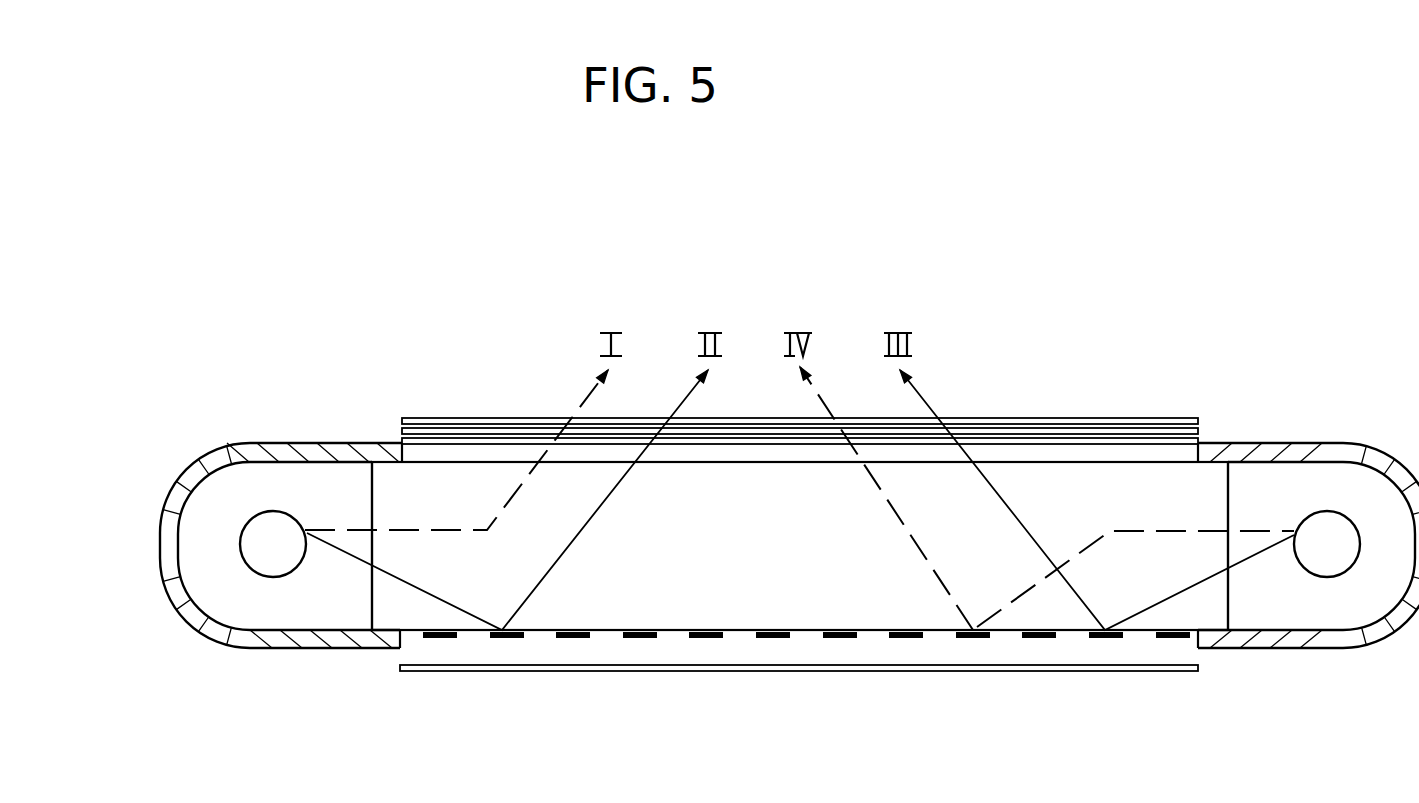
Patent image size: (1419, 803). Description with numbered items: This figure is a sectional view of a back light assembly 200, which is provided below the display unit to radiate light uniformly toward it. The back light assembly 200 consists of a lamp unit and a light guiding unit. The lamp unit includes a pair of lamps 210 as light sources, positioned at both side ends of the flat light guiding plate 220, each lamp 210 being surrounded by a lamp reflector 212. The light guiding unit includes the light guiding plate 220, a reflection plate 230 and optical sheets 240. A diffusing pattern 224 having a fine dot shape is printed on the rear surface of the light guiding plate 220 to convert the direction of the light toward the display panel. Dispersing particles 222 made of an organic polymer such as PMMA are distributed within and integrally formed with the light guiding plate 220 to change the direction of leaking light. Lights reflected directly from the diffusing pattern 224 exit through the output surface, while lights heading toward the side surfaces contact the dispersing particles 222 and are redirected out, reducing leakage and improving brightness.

The back light assembly 200 is at (188, 432).
The lamp 210 is at (278, 574).
The lamp reflector 212 is at (215, 645).
The light guiding plate 220 is at (980, 590).
The dispersing particles 222 is at (660, 595).
The diffusing pattern 224 is at (838, 640).
The reflection plate 230 is at (457, 674).
The optical sheets 240 is at (338, 398).